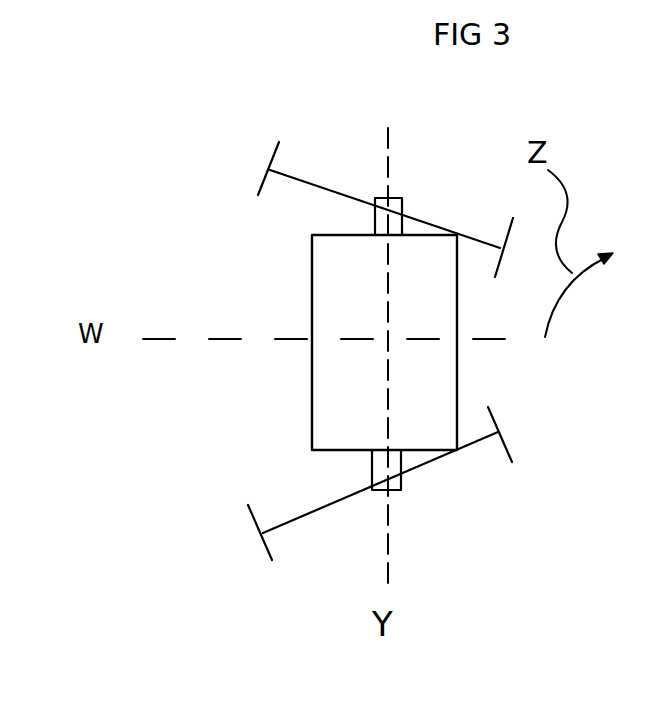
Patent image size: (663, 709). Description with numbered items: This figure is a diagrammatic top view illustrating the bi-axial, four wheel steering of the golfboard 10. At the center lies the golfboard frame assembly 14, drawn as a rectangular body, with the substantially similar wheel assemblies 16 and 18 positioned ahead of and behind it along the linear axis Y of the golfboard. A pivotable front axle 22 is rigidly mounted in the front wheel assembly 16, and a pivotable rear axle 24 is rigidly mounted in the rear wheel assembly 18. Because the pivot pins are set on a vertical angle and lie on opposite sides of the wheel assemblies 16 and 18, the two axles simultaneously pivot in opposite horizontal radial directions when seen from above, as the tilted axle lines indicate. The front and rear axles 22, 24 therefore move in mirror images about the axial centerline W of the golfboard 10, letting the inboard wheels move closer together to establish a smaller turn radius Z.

The golfboard 10 is at (112, 455).
The golfboard frame assembly 14 is at (323, 292).
The front wheel assembly 16 is at (403, 202).
The rear wheel assembly 18 is at (397, 483).
The front axle 22 is at (305, 178).
The rear axle 24 is at (318, 510).